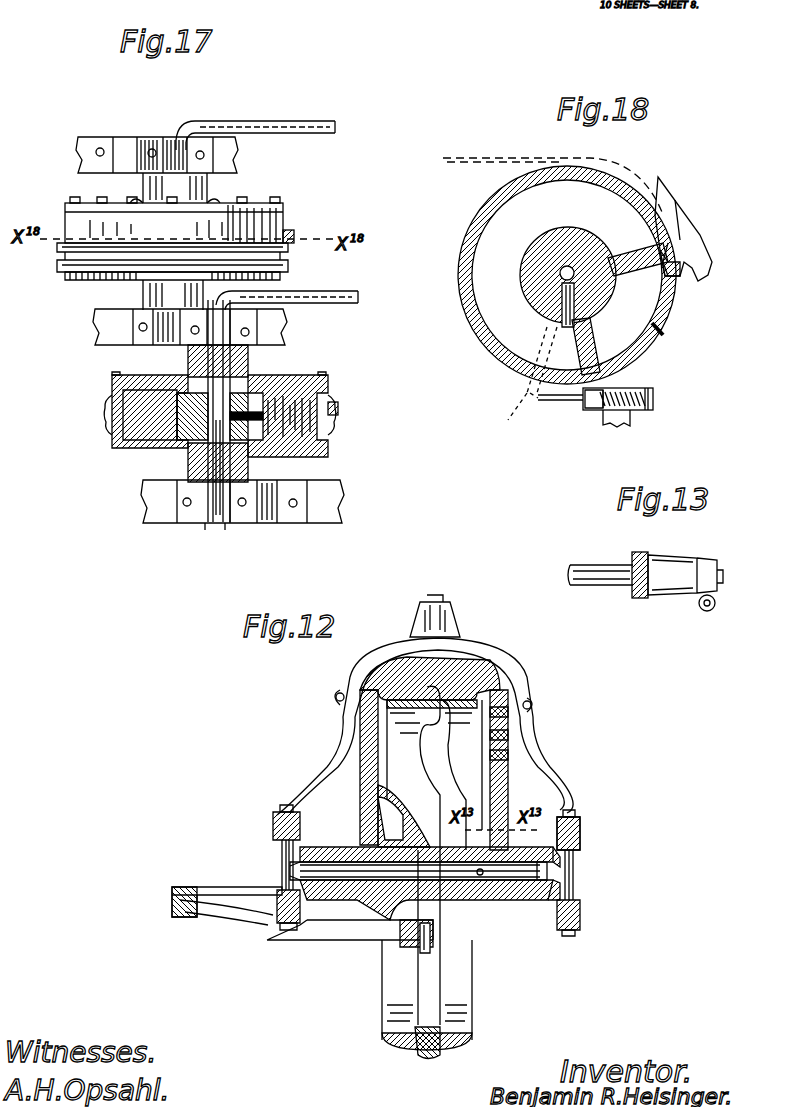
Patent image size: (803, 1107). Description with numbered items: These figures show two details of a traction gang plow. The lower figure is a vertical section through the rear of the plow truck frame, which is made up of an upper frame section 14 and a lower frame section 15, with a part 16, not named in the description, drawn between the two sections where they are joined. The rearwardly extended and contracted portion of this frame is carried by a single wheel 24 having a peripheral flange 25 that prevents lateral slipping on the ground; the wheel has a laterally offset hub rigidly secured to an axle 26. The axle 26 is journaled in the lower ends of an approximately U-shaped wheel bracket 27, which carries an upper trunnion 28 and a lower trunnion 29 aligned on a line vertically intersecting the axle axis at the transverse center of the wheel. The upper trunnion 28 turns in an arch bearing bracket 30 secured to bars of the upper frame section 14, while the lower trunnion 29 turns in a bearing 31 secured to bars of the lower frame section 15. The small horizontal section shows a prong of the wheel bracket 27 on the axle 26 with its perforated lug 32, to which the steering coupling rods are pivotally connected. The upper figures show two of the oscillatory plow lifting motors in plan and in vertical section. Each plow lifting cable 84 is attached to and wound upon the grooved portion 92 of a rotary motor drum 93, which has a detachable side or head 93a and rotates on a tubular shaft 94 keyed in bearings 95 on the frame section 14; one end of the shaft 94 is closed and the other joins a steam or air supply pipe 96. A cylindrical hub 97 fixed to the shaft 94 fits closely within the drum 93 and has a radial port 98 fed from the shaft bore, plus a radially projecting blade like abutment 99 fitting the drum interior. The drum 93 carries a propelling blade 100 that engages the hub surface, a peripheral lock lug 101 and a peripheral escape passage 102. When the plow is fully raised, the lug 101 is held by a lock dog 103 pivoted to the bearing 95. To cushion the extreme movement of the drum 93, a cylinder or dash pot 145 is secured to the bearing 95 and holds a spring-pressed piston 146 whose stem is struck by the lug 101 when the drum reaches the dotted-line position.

In FIG. 17, the upper frame section 14 is at (325, 505).
In FIG. 12, the upper frame section 14 is at (273, 825).
In FIG. 12, the lower frame section 15 is at (172, 900).
In FIG. 12, the bolt 16 is at (282, 858).
In FIG. 12, the single wheel 24 is at (470, 1005).
In FIG. 12, the peripheral flange 25 is at (427, 1060).
In FIG. 13, the axle 26 is at (605, 585).
In FIG. 12, the axle 26 is at (505, 882).
In FIG. 13, the wheel bracket 27 is at (640, 600).
In FIG. 12, the wheel bracket 27 is at (500, 785).
In FIG. 12, the upper trunnion 28 is at (440, 600).
In FIG. 12, the lower trunnion 29 is at (422, 950).
In FIG. 12, the arch bearing bracket 30 is at (508, 667).
In FIG. 12, the bearing 31 is at (365, 935).
In FIG. 13, the perforated lugs 32 is at (705, 612).
In FIG. 18, the plow lifting cable 84 is at (488, 158).
In FIG. 17, the grooved portion 92 is at (63, 252).
In FIG. 17, the motor drum 93 is at (252, 230).
In FIG. 18, the motor drum 93 is at (483, 330).
In FIG. 17, the detachable side or head 93a is at (256, 218).
In FIG. 17, the tubular shaft 94 is at (213, 460).
In FIG. 18, the tubular shaft 94 is at (557, 265).
In FIG. 17, the bearings 95 is at (99, 150).
In FIG. 18, the bearings 95 is at (620, 425).
In FIG. 17, the steam or air supply pipe 96 is at (315, 121).
In FIG. 17, the cylindrical hub 97 is at (175, 425).
In FIG. 18, the cylindrical hub 97 is at (537, 300).
In FIG. 17, the radial port 98 is at (258, 435).
In FIG. 18, the radial port 98 is at (583, 302).
In FIG. 17, the blade like abutment 99 is at (334, 432).
In FIG. 18, the blade like abutment 99 is at (590, 350).
In FIG. 18, the propelling blade 100 is at (650, 252).
In FIG. 17, the peripheral lock lug 101 is at (292, 236).
In FIG. 18, the peripheral lock lug 101 is at (670, 243).
In FIG. 18, the peripheral escape passage 102 is at (665, 328).
In FIG. 18, the lock dog 103 is at (700, 267).
In FIG. 18, the cylinder or dash pot 145 is at (650, 410).
In FIG. 18, the piston 146 is at (600, 410).